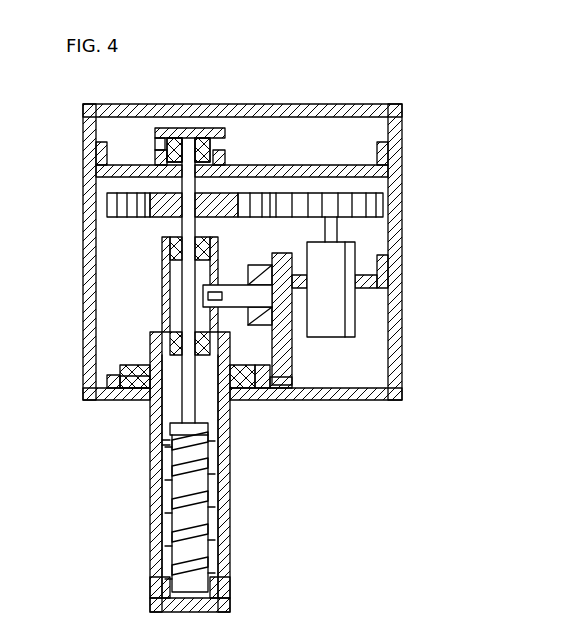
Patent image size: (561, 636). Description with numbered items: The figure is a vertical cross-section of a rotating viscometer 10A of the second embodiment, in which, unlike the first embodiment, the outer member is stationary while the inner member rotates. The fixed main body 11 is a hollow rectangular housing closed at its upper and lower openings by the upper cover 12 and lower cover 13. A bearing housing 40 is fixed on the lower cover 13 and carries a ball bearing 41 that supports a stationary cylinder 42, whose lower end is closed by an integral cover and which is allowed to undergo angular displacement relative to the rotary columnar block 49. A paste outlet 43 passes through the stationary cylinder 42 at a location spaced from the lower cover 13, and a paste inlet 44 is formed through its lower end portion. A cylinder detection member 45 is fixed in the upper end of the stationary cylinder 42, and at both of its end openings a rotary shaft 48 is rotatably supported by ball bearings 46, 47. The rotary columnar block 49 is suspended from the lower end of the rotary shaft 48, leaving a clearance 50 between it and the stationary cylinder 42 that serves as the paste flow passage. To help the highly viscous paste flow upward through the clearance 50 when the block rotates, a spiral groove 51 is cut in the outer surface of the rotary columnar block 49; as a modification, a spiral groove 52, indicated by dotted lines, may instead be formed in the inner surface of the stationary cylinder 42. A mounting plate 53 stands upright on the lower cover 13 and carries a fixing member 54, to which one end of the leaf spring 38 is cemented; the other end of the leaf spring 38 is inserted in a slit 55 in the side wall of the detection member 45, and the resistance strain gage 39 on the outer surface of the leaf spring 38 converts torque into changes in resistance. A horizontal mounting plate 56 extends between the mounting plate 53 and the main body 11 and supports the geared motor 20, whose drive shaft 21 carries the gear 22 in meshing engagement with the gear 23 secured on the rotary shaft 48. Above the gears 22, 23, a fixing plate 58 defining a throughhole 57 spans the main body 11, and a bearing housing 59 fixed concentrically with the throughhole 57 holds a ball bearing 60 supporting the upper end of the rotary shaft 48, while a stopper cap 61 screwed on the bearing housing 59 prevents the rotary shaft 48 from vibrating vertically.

The rotating viscometer 10A is at (351, 97).
The main body 11 is at (404, 152).
The upper cover 12 is at (285, 103).
The lower cover 13 is at (242, 411).
The geared motor 20 is at (345, 338).
The drive shaft 21 is at (340, 232).
The gear 22 is at (385, 206).
The gear 23 is at (152, 218).
The leaf spring 38 is at (250, 282).
The resistance strain gage 39 is at (218, 305).
The bearing housing 40 is at (124, 390).
The ball bearing 41 is at (134, 392).
The stationary cylinder 42 is at (229, 484).
The paste outlet 43 is at (222, 440).
The paste inlet 44 is at (226, 594).
The detection member 45 is at (163, 302).
The ball bearing 46 is at (170, 252).
The ball bearing 47 is at (170, 342).
The rotary shaft 48 is at (200, 230).
The rotary columnar block 49 is at (222, 518).
The clearance 50 is at (222, 553).
The spiral groove 51 is at (170, 580).
The spiral groove 52 is at (165, 514).
The mounting plate 53 is at (268, 382).
The fixing member 54 is at (284, 330).
The slit 55 is at (228, 292).
The mounting plate 56 is at (390, 300).
The throughhole 57 is at (200, 178).
The fixing plate 58 is at (290, 172).
The bearing housing 59 is at (158, 150).
The ball bearing 60 is at (190, 134).
The stopper cap 61 is at (216, 130).